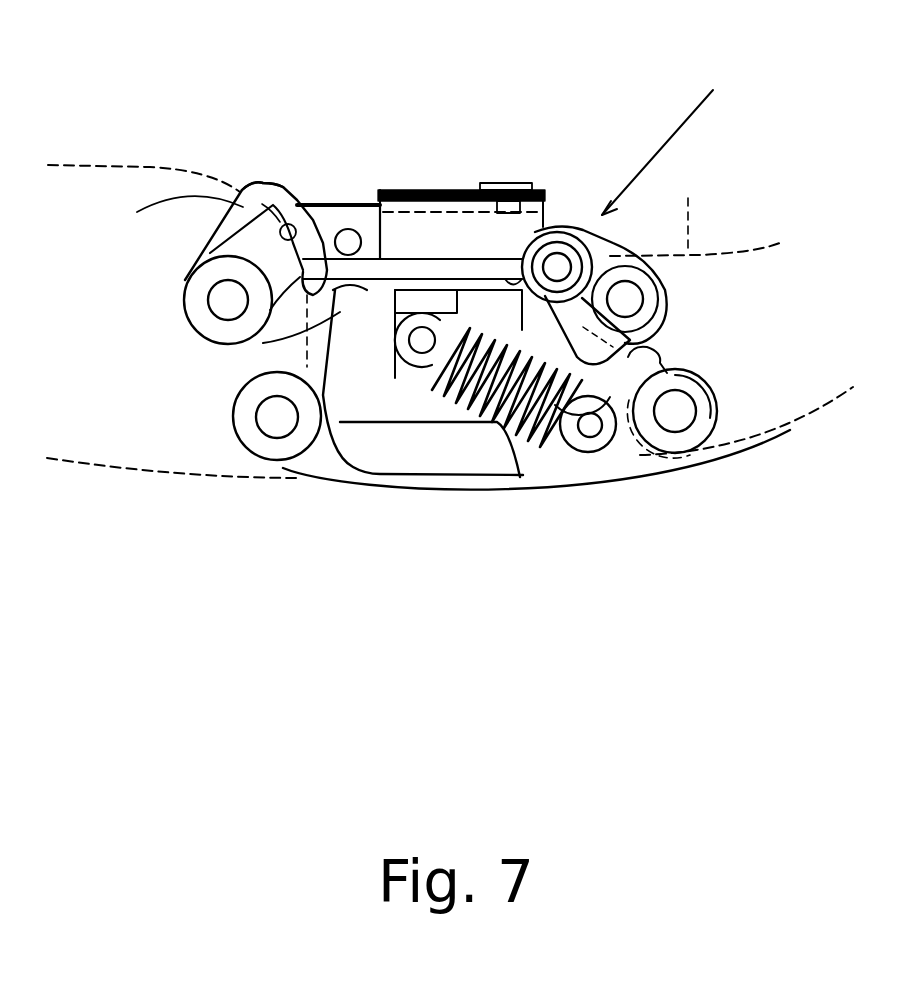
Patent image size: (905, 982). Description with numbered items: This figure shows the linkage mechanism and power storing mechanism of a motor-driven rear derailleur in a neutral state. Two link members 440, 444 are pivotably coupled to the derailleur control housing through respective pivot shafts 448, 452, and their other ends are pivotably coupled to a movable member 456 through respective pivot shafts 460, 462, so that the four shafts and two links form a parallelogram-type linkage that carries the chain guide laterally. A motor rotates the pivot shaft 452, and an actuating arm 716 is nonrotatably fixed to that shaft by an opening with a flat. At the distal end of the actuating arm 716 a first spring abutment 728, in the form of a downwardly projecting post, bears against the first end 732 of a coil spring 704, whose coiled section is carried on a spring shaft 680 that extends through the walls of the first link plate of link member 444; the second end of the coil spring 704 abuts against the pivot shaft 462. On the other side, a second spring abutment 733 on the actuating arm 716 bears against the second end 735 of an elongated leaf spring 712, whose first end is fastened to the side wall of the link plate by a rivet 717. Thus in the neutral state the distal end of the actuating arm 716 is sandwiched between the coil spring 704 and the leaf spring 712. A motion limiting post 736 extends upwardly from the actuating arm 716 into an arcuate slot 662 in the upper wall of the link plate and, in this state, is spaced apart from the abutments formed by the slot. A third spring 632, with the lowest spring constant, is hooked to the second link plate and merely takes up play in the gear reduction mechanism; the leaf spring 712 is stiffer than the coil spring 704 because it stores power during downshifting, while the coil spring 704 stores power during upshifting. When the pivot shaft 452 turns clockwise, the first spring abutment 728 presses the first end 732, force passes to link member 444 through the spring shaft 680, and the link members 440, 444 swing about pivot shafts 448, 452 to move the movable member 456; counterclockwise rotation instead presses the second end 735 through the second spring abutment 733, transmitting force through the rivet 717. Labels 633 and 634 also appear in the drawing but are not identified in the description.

The link member 440 is at (507, 492).
The link member 444 is at (687, 135).
The pivot shaft 448 is at (282, 424).
The pivot shaft 452 is at (228, 300).
The movable member 456 is at (450, 316).
The pivot shaft 460 is at (673, 418).
The pivot shaft 462 is at (628, 299).
The spring 632 is at (513, 480).
The lever edge 633 is at (145, 215).
The lever lower arm 634 is at (332, 322).
The arcuate slot 662 is at (303, 259).
The spring shaft 680 is at (554, 262).
The coil spring 704 is at (560, 222).
The elongated leaf spring 712 is at (441, 190).
The actuating arm 716 is at (187, 320).
The rivet 717 is at (504, 182).
The first spring abutment 728 is at (345, 268).
The first end of coil spring 732 is at (360, 272).
The second spring abutment 733 is at (320, 206).
The second end of leaf spring 735 is at (349, 228).
The motion limiting post 736 is at (268, 188).